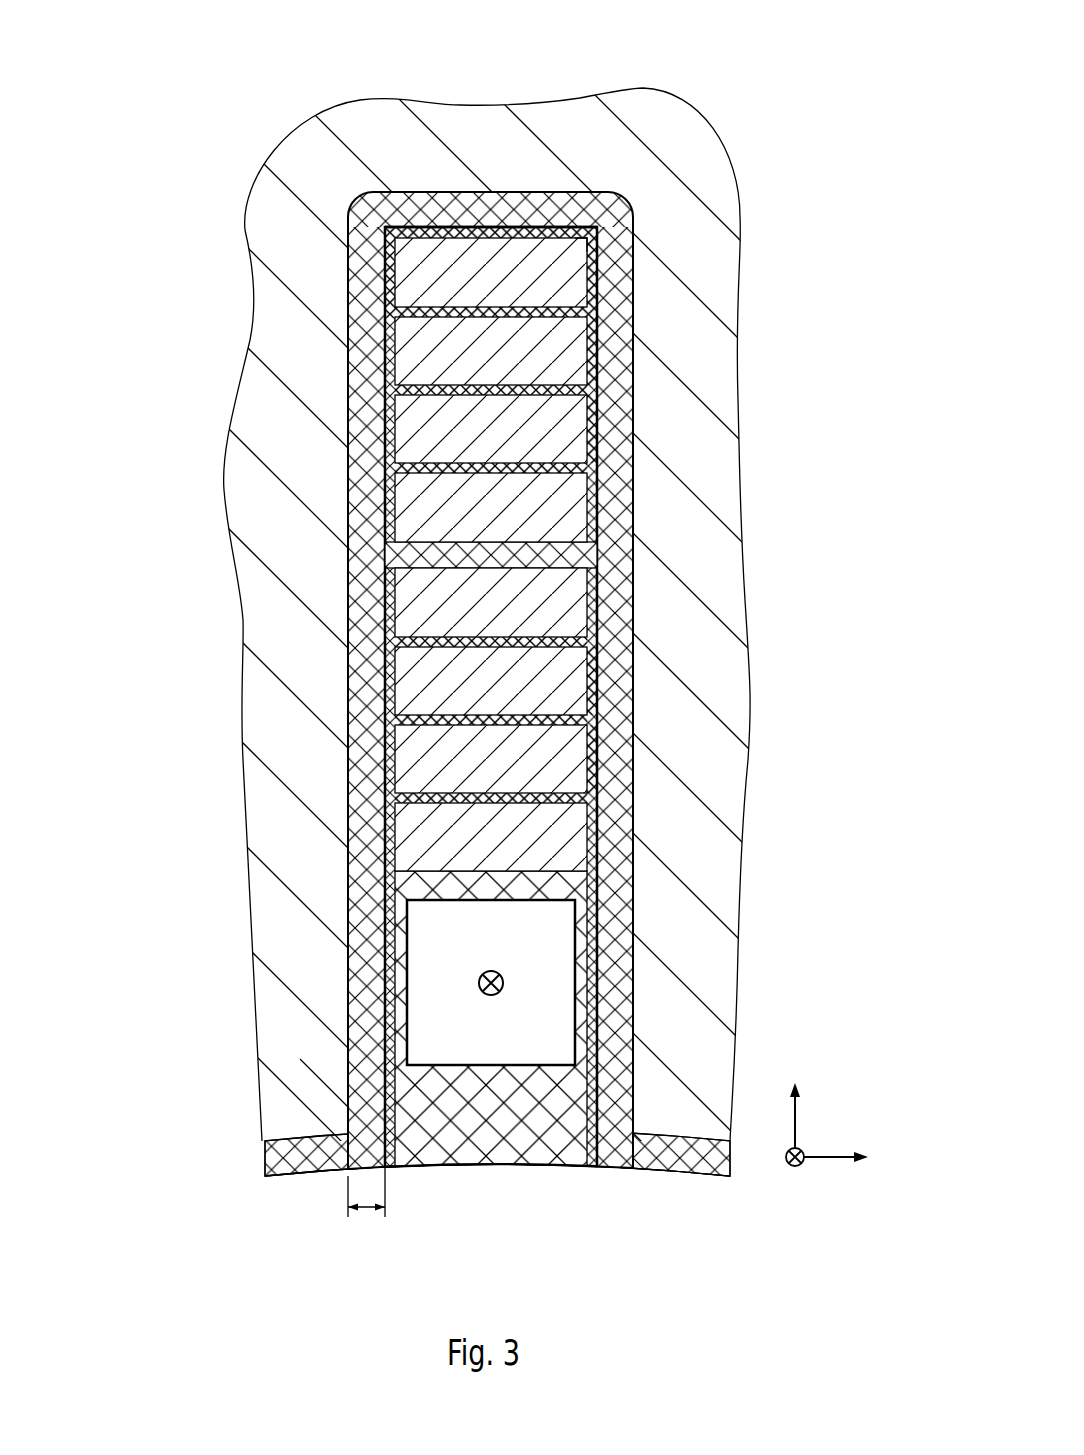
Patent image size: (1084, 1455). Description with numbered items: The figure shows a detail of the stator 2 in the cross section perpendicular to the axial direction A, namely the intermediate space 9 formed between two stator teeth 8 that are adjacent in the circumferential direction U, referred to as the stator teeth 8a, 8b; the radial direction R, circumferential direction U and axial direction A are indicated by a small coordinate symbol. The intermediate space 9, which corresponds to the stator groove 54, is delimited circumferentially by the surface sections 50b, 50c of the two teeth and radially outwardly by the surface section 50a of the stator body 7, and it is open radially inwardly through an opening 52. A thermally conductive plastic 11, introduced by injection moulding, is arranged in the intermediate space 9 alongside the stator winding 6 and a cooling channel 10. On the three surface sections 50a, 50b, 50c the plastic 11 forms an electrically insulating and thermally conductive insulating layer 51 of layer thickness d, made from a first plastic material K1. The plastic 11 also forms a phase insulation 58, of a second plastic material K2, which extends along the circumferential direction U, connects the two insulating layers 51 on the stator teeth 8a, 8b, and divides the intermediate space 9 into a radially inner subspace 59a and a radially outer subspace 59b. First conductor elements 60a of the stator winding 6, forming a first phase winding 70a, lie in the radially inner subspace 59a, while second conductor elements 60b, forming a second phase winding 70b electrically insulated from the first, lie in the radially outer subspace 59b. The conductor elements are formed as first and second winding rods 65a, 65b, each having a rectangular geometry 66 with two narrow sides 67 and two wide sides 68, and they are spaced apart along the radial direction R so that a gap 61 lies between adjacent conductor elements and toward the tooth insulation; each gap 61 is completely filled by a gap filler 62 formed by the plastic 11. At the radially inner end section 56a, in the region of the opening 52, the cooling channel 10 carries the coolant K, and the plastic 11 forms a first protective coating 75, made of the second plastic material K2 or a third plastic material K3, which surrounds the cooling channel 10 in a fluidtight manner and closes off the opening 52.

The stator 2 is at (848, 140).
The stator body 7 is at (694, 106).
The stator winding 6 is at (489, 212).
The stator teeth 8 is at (481, 679).
The stator tooth 8a is at (220, 497).
The stator tooth 8b is at (744, 488).
The intermediate space 9 is at (497, 1230).
The stator groove 54 is at (428, 1177).
The cooling channel 10 is at (505, 953).
The coolant K is at (504, 983).
The thermally conductive plastic 11 is at (492, 652).
The insulating layer 51 is at (492, 608).
The first plastic material K1 is at (492, 608).
The gap filler 62 is at (497, 697).
The second plastic material K2 is at (497, 697).
The phase insulation 58 is at (597, 548).
The first protective coating 75 is at (538, 1147).
The third plastic material K3 is at (511, 1064).
The opening 52 is at (492, 1168).
The surface section 50a is at (553, 200).
The surface section 50b is at (363, 739).
The surface section 50c is at (617, 708).
The radially inner end section 56a is at (308, 1056).
The gap 61 is at (388, 396).
The narrow sides 67 is at (388, 270).
The wide sides 68 is at (410, 228).
The rectangular geometry 66 is at (604, 247).
The first phase winding 70a is at (609, 665).
The second phase winding 70b is at (609, 348).
The radially inner subspace 59a is at (609, 758).
The radially outer subspace 59b is at (609, 428).
The first conductor elements 60a is at (491, 719).
The first winding rods 65a is at (532, 614).
The second conductor elements 60b is at (491, 390).
The second winding rods 65b is at (532, 284).
The layer thickness d is at (366, 1212).
The radial direction R is at (798, 1120).
The circumferential direction U is at (830, 1160).
The axial direction A is at (790, 1168).